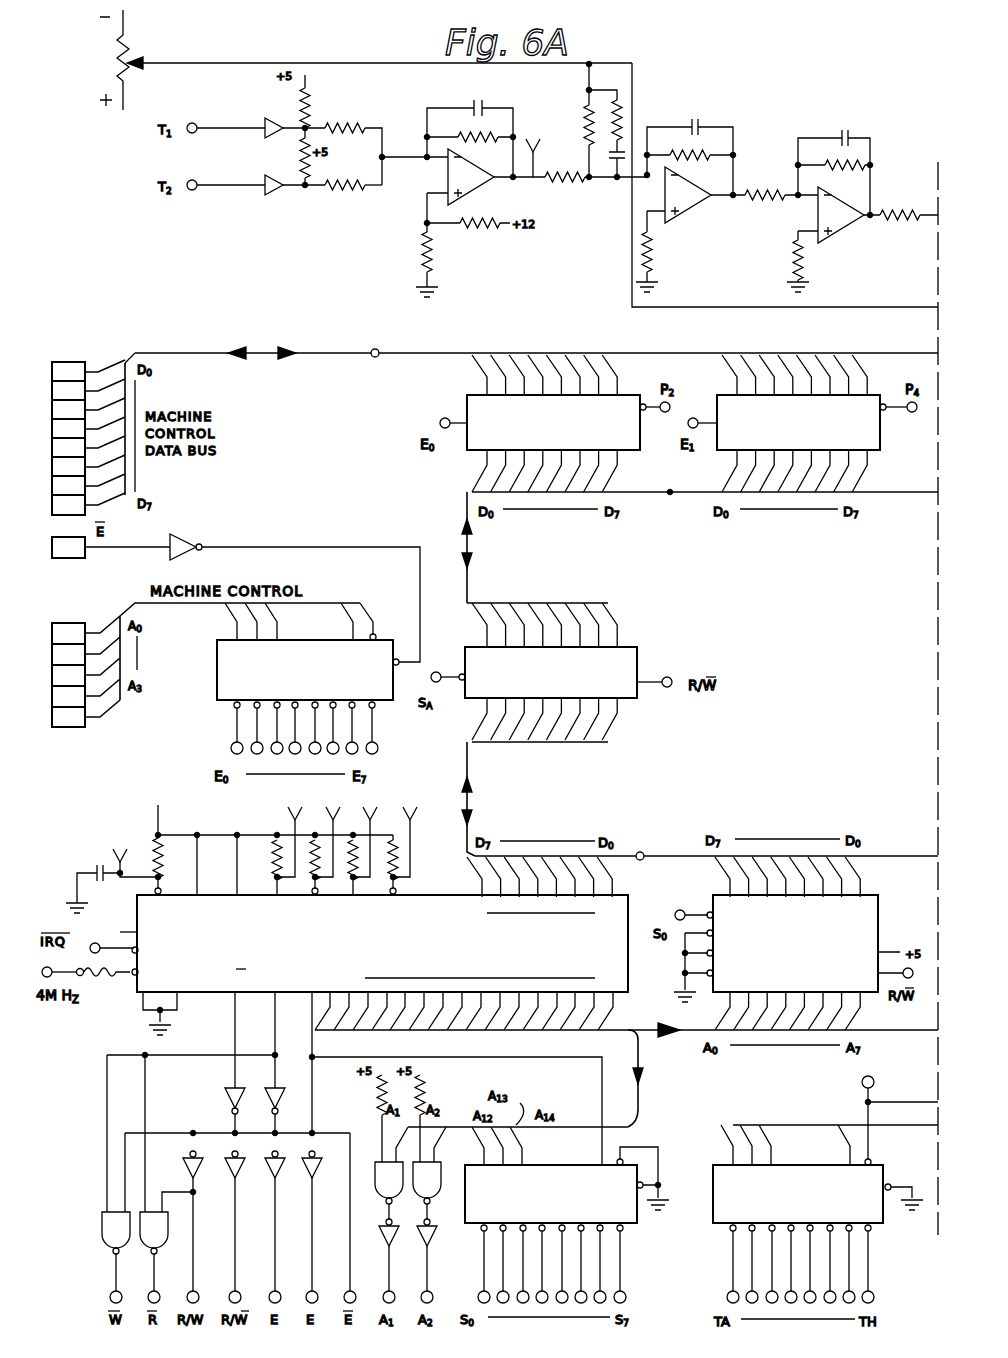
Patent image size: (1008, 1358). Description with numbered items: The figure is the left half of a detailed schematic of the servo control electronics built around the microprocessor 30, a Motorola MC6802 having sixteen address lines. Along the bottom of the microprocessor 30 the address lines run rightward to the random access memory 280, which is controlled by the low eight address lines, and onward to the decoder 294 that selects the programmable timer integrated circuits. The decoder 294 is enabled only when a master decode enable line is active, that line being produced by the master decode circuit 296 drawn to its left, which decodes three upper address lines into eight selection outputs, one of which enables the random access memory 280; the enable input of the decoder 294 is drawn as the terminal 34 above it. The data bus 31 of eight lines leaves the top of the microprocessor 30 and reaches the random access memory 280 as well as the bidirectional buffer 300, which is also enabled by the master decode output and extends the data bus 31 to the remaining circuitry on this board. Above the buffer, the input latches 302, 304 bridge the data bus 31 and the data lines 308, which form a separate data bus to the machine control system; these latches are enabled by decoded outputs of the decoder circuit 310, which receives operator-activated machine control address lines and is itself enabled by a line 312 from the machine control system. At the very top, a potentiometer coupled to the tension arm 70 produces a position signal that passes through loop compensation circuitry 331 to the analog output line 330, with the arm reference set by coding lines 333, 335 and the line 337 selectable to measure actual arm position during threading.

The tension arm 70 is at (142, 42).
The coding line 333 is at (250, 104).
The coding line 335 is at (228, 190).
The loop compensation circuitry 331 is at (824, 122).
The line 330 is at (922, 222).
The line 337 is at (736, 307).
The data lines 308 is at (378, 350).
The input latch 302 is at (640, 455).
The input latch 304 is at (886, 452).
The data bus 31 is at (671, 496).
The line 312 is at (151, 545).
The decoder circuit 310 is at (217, 690).
The bidirectional buffer 300 is at (636, 708).
The microprocessor 30 is at (458, 858).
The random access memory 280 is at (910, 895).
The master decode circuit 296 is at (640, 1225).
The decoder 294 is at (882, 1225).
The signal line 34 is at (848, 1094).